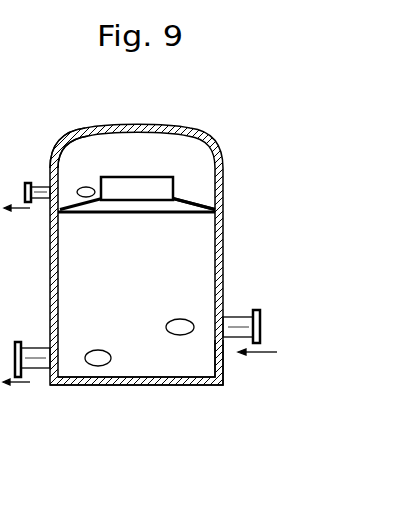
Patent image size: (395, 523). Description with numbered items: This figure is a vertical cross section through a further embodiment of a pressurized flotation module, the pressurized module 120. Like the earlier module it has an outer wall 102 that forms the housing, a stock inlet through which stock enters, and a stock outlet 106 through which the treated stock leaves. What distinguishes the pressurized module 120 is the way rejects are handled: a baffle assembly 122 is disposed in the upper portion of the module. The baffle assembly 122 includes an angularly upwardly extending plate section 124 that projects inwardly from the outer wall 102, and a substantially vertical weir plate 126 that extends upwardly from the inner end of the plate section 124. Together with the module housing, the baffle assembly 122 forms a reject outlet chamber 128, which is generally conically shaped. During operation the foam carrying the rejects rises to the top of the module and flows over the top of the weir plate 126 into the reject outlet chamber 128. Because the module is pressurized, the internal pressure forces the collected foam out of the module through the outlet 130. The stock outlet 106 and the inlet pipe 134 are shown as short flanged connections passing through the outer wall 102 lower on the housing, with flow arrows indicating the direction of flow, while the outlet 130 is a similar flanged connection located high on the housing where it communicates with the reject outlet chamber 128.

The pressurized module 120 is at (229, 128).
The outer wall 102 is at (223, 360).
The reject outlet chamber 128 is at (62, 152).
The plate section 124 is at (191, 212).
The baffle assembly 122 is at (210, 196).
The weir plate 126 is at (85, 186).
The outlet 130 is at (38, 189).
The stock outlet 106 is at (38, 356).
The inlet pipe 134 is at (231, 325).